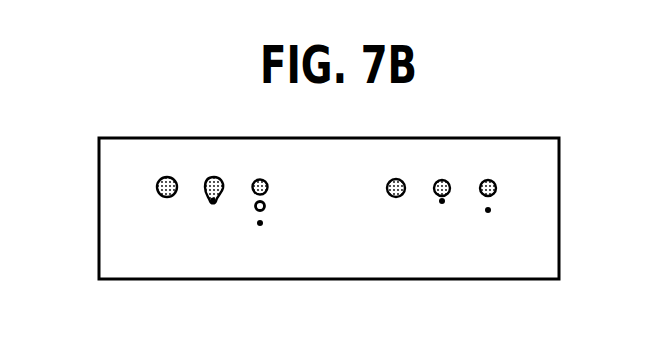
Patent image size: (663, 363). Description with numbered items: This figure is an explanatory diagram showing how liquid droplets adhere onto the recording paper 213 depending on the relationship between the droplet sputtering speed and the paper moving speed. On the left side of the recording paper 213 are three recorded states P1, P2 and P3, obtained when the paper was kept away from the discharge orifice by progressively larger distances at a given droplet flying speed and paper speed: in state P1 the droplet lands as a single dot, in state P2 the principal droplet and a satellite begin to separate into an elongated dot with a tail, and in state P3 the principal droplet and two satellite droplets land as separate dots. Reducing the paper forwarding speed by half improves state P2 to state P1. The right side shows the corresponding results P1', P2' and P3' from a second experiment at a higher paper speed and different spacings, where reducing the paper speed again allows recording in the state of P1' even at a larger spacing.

The recording paper 213 is at (315, 278).
The droplet adhesion state P1 is at (168, 220).
The droplet adhesion state P2 is at (215, 220).
The droplet adhesion state P3 is at (263, 222).
The droplet adhesion state P1' is at (398, 221).
The droplet adhesion state P2' is at (445, 222).
The droplet adhesion state P3' is at (490, 222).